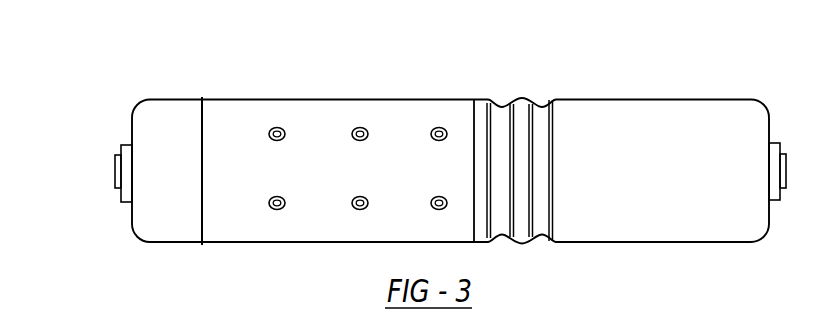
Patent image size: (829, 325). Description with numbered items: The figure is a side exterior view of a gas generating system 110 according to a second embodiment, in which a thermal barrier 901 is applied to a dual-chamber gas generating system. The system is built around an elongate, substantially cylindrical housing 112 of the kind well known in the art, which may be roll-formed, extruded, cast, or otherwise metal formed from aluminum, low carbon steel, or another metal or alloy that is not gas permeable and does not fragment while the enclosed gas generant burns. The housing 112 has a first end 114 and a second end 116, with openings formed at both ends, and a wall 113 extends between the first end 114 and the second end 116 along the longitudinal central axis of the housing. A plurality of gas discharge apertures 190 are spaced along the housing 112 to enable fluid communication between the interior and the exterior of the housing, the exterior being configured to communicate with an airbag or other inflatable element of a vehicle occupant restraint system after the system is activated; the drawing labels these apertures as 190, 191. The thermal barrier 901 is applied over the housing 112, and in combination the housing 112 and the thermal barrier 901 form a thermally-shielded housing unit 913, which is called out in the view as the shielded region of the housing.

The gas generating system 110 is at (791, 61).
The housing 112 is at (617, 97).
The wall 113 is at (474, 100).
The first end 114 is at (171, 223).
The second end 116 is at (727, 218).
The gas discharge apertures 190 is at (278, 127).
The fastener 191 is at (360, 127).
The thermal barrier 901 is at (407, 123).
The thermally-shielded housing unit 913 is at (150, 117).